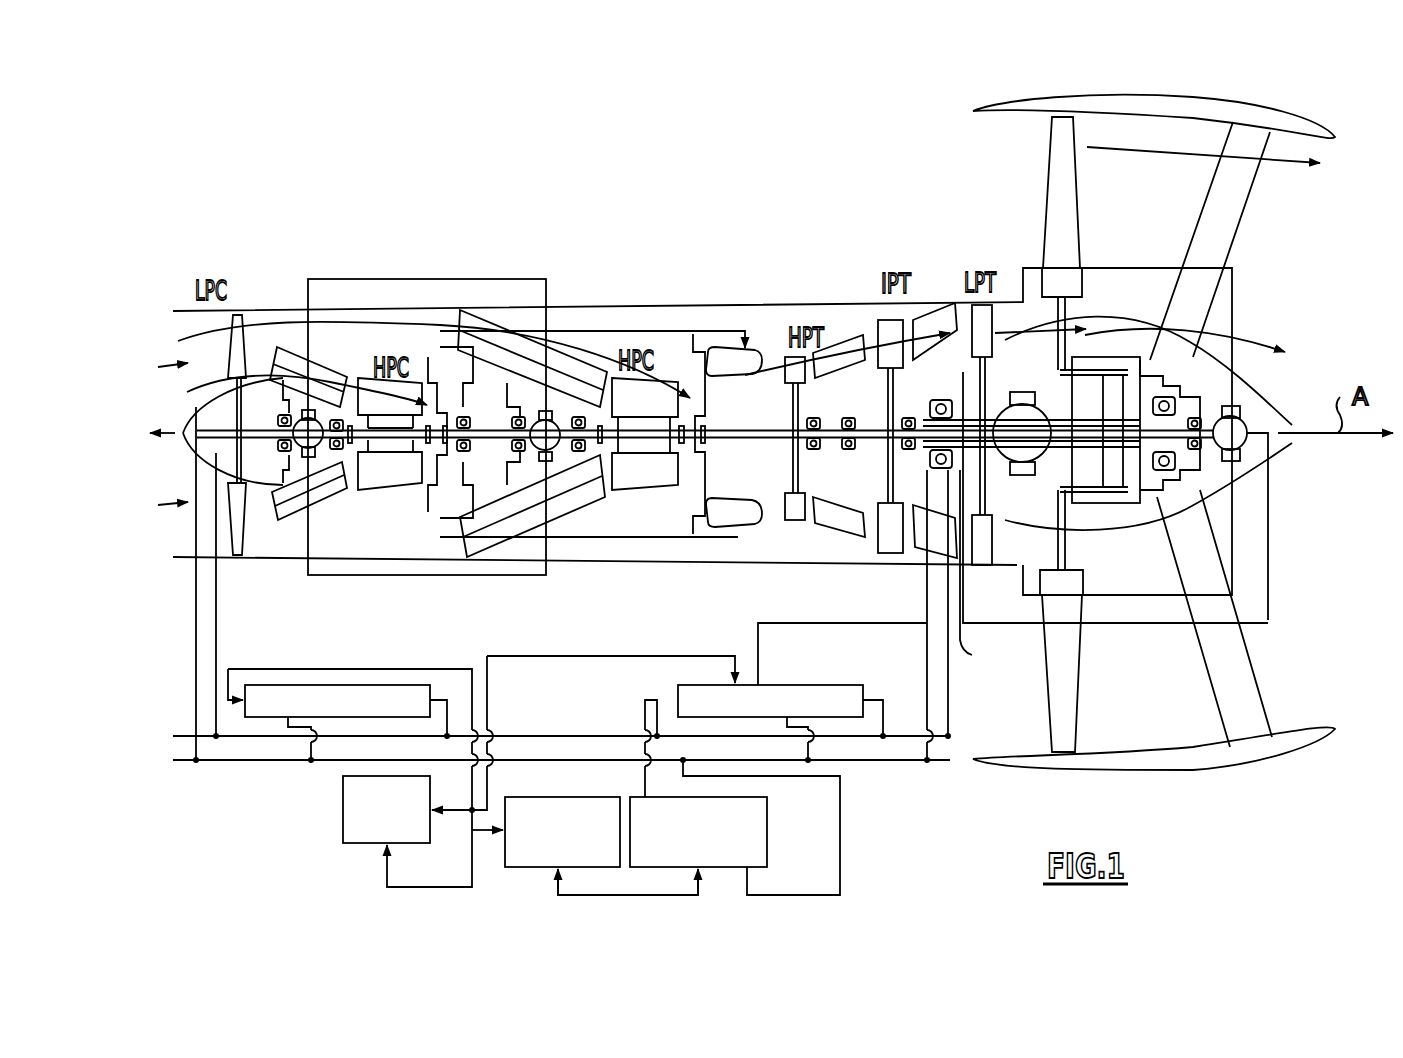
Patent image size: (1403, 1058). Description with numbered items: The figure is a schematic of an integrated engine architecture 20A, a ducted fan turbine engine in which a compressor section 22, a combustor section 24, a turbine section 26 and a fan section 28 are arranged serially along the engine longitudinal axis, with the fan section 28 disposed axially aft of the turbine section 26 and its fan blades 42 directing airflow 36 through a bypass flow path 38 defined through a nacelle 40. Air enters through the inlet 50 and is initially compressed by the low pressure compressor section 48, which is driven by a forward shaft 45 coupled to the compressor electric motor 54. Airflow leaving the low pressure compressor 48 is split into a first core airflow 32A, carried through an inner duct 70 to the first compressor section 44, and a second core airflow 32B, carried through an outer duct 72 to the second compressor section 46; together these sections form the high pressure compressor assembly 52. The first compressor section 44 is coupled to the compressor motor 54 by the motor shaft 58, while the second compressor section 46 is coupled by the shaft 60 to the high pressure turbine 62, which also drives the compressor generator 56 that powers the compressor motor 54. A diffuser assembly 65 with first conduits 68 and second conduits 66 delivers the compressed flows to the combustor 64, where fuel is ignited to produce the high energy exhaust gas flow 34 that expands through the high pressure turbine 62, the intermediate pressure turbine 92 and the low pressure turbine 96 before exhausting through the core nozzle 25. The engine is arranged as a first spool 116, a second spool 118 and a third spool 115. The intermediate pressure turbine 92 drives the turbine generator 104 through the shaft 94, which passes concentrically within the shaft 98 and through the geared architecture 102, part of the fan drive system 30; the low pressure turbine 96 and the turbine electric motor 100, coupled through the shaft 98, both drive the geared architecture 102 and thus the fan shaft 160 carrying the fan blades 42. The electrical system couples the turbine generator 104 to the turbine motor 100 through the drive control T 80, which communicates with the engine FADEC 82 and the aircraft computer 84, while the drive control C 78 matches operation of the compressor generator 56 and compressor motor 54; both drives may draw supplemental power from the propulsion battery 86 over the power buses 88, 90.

The integrated engine architecture 20A is at (452, 144).
The compressor section 22 is at (207, 233).
The combustor section 24 is at (702, 230).
The core nozzle 25 is at (1200, 300).
The turbine section 26 is at (788, 212).
The fan section 28 is at (1025, 72).
The fan drive system 30 is at (878, 257).
The first core airflow 32A is at (330, 378).
The second core airflow 32B is at (570, 376).
The high energy exhaust gas flow 34 is at (873, 347).
The airflow 36 is at (1167, 150).
The bypass flow path 38 is at (1123, 190).
The nacelle 40 is at (1207, 112).
The fan blades 42 is at (1060, 152).
The first compressor section 44 is at (404, 392).
The forward shaft 45 is at (262, 445).
The second compressor section 46 is at (655, 385).
The low pressure compressor section 48 is at (237, 315).
The inlet 50 is at (160, 353).
The high pressure compressor assembly 52 is at (293, 272).
The compressor electric motor 54 is at (307, 458).
The compressor generator 56 is at (530, 450).
The motor shaft 58 is at (395, 438).
The shaft 60 is at (760, 430).
The high pressure turbine 62 is at (793, 520).
The combustor 64 is at (750, 335).
The diffuser assembly 65 is at (704, 566).
The second conduits 66 is at (695, 490).
The first conduits 68 is at (638, 542).
The inner duct 70 is at (334, 502).
The outer duct 72 is at (558, 525).
The drive control C 78 is at (370, 685).
The drive control T 80 is at (810, 685).
The engine FADEC 82 is at (342, 818).
The aircraft computer 84 is at (540, 869).
The propulsion battery 86 is at (767, 828).
The power bus 88 is at (583, 757).
The power bus 90 is at (603, 733).
The intermediate pressure turbine 92 is at (883, 540).
The shaft 94 is at (1093, 482).
The low pressure turbine 96 is at (992, 658).
The shaft 98 is at (1022, 477).
The turbine electric motor 100 is at (1010, 453).
The geared architecture 102 is at (1113, 480).
The turbine generator 104 is at (1241, 423).
The third spool 115 is at (1032, 266).
The first spool 116 is at (660, 500).
The second spool 118 is at (1175, 563).
The fan shaft 160 is at (1110, 367).